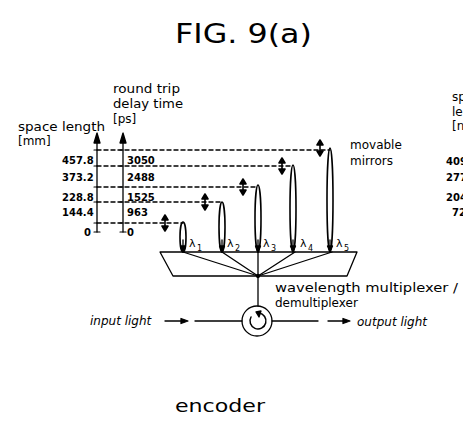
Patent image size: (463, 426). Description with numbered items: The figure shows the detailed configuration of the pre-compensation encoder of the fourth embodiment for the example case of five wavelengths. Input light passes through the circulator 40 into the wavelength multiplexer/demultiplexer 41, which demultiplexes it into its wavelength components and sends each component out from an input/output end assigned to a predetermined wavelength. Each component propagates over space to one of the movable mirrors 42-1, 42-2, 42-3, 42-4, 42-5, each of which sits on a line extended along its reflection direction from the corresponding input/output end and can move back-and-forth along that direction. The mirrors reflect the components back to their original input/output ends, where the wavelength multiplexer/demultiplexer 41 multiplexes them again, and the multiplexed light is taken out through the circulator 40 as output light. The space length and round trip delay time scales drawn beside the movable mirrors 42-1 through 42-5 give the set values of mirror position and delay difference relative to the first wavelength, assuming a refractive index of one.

The circulator 40 is at (245, 331).
The wavelength multiplexer/demultiplexer 41 is at (172, 278).
The movable mirror 42-1 is at (181, 237).
The movable mirror 42-2 is at (222, 203).
The movable mirror 42-3 is at (258, 184).
The movable mirror 42-4 is at (294, 166).
The movable mirror 42-5 is at (343, 136).